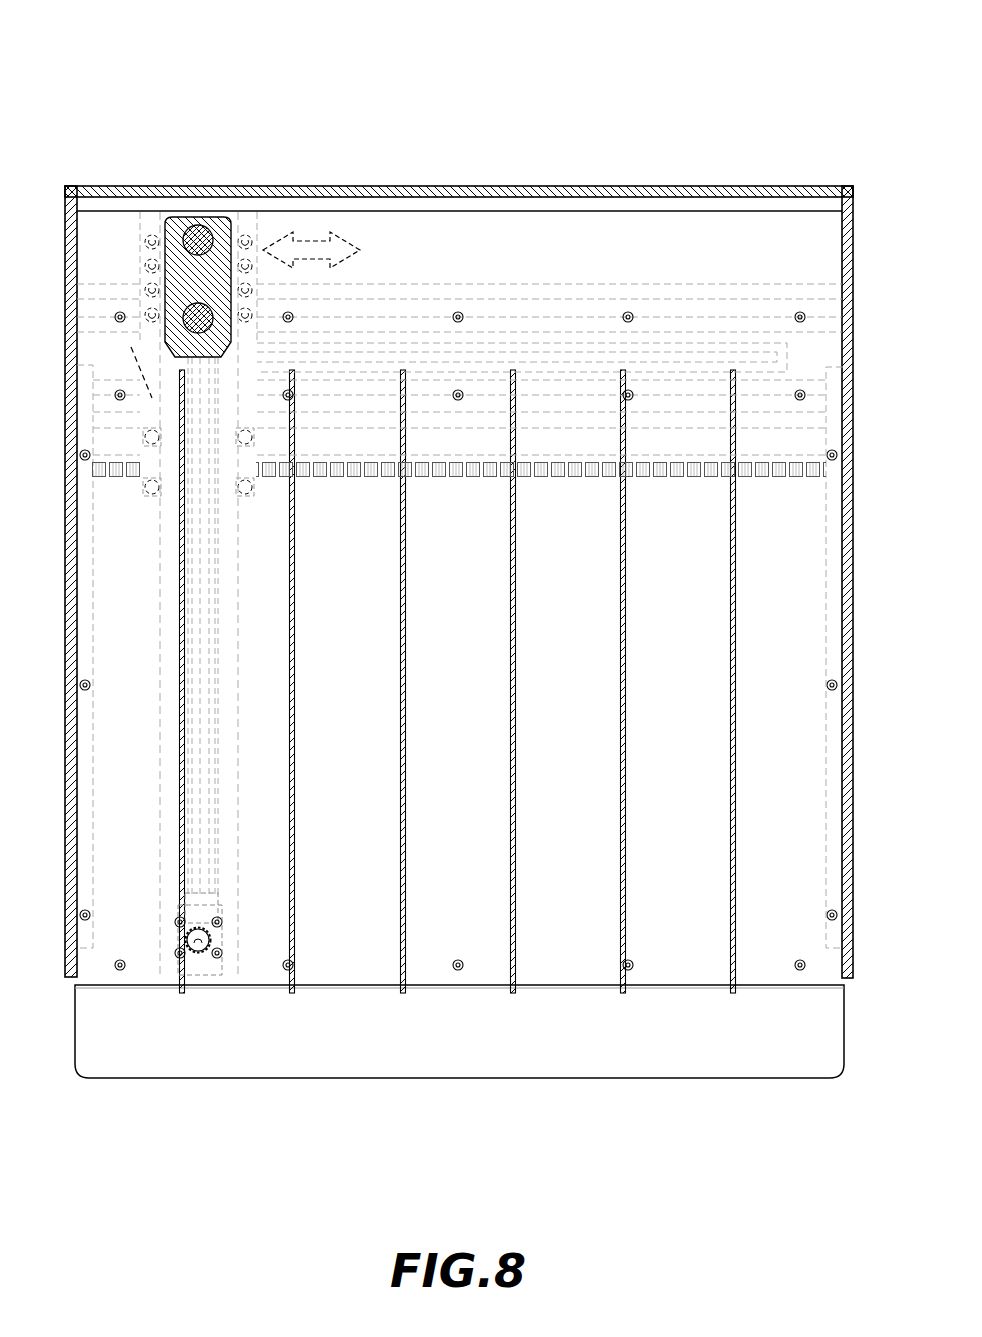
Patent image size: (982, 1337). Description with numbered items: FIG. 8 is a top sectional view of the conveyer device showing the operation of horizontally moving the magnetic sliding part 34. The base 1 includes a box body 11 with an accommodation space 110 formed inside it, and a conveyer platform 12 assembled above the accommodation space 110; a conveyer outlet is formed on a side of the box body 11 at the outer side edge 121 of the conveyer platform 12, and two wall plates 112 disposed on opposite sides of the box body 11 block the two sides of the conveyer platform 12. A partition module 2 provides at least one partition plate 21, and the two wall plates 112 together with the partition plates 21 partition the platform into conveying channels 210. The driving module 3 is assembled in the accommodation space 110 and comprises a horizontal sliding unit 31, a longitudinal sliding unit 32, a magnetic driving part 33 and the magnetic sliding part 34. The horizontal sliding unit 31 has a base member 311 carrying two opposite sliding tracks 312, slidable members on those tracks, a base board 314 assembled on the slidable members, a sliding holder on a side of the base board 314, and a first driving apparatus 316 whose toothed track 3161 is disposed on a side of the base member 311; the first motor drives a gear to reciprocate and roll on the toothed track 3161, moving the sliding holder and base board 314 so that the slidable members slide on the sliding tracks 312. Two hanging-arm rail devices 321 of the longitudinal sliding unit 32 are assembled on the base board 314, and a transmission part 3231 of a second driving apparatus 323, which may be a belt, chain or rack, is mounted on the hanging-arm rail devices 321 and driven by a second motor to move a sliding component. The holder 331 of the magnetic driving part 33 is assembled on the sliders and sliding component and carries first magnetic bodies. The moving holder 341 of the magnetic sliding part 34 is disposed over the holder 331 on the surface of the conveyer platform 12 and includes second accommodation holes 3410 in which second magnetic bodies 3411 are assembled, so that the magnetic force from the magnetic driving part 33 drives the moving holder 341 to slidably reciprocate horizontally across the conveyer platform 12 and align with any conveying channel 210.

The base 1 is at (712, 178).
The box body 11 is at (765, 192).
The accommodation space 110 is at (688, 247).
The wall plate 112 is at (845, 222).
The conveyer platform 12 is at (765, 972).
The outer side edge 121 is at (670, 986).
The partition module 2 is at (458, 808).
The partition plate 21 is at (513, 945).
The conveying channel 210 is at (465, 905).
The driving module 3 is at (453, 497).
The horizontal sliding unit 31 is at (372, 246).
The base member 311 is at (596, 340).
The sliding track 312 is at (525, 296).
The base board 314 is at (116, 326).
The first driving apparatus 316 is at (412, 135).
The toothed track 3161 is at (485, 458).
The longitudinal sliding unit 32 is at (206, 729).
The hanging-arm rail device 321 is at (168, 958).
The second driving apparatus 323 is at (287, 1155).
The transmission part 3231 is at (212, 905).
The magnetic driving part 33 is at (265, 135).
The holder 331 is at (249, 222).
The magnetic sliding part 34 is at (173, 184).
The moving holder 341 is at (213, 228).
The second accommodation hole 3410 is at (198, 224).
The second magnetic body 3411 is at (192, 242).